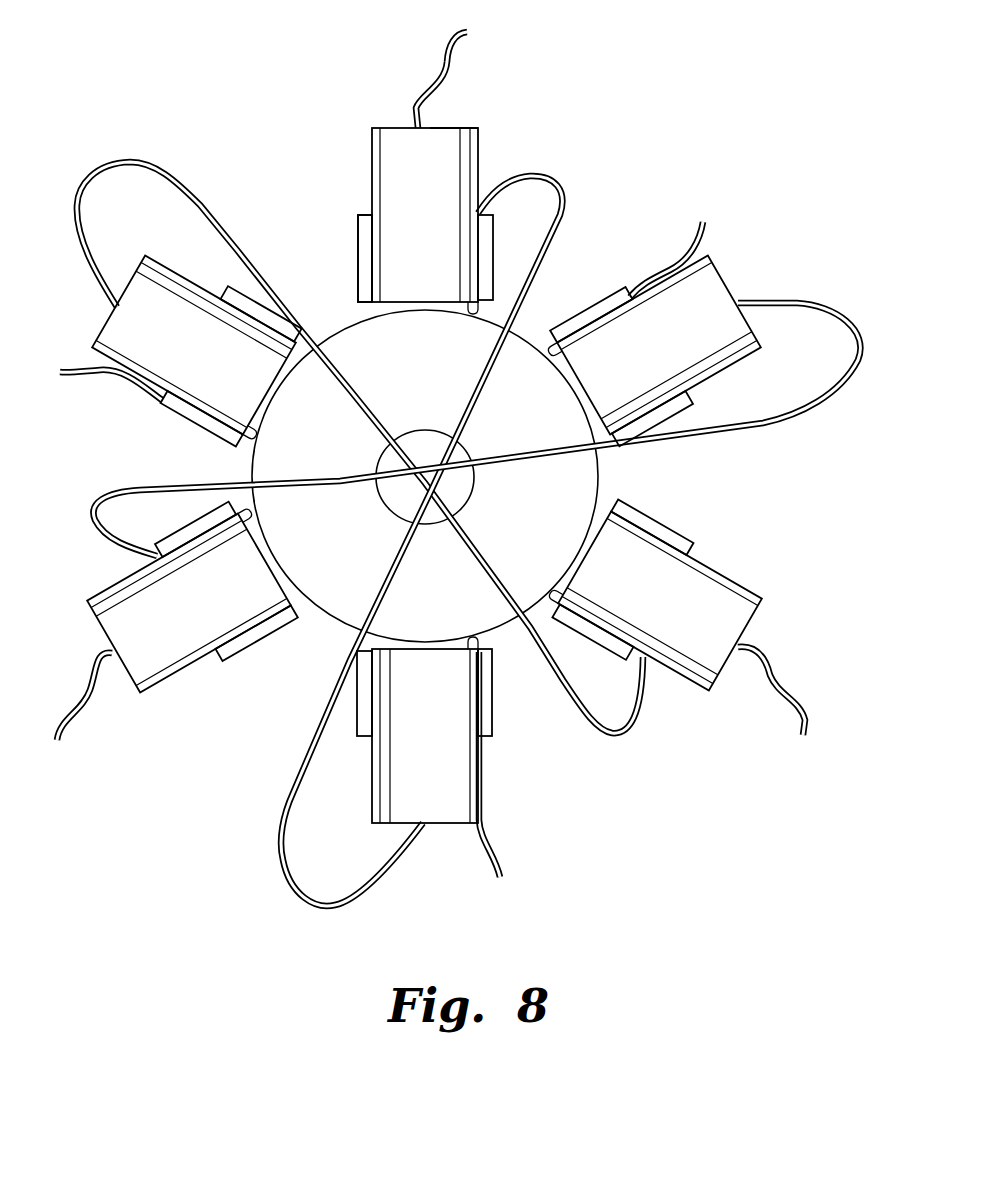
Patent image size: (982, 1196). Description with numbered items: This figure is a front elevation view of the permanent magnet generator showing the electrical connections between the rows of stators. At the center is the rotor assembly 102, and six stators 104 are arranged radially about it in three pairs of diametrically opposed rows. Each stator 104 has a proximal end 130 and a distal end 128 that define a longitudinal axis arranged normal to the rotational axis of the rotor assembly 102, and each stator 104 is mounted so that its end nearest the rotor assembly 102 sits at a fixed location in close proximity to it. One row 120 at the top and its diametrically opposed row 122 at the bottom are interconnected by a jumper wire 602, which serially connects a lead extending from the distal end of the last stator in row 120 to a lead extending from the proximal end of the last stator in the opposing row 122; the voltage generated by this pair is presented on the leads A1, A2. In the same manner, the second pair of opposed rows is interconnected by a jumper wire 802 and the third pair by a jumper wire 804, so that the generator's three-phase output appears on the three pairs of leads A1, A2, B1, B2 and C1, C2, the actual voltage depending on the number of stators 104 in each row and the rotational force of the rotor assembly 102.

The rotor assembly 102 is at (236, 467).
The stator 104 is at (424, 500).
The stator row 120 is at (355, 160).
The opposing stator row 122 is at (445, 845).
The distal end 128 is at (448, 128).
The proximal end 130 is at (355, 302).
The jumper wire 602 is at (297, 793).
The jumper wire 802 is at (178, 183).
The jumper wire 804 is at (747, 427).
The output lead A1 is at (500, 877).
The output lead A2 is at (470, 32).
The output lead B1 is at (60, 374).
The output lead B2 is at (803, 736).
The output lead C1 is at (703, 222).
The output lead C2 is at (60, 742).